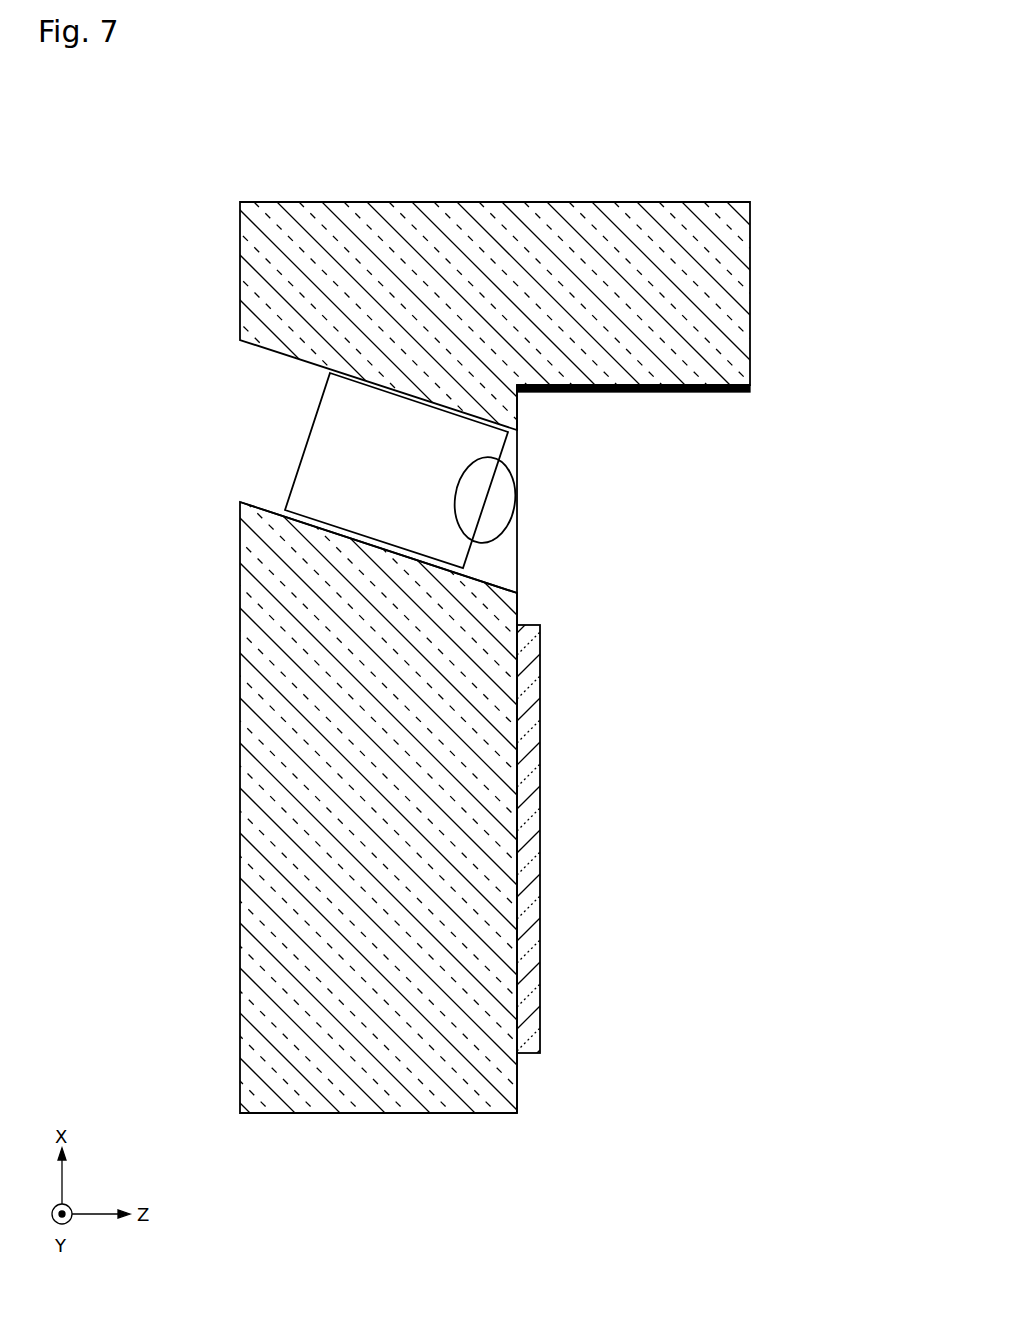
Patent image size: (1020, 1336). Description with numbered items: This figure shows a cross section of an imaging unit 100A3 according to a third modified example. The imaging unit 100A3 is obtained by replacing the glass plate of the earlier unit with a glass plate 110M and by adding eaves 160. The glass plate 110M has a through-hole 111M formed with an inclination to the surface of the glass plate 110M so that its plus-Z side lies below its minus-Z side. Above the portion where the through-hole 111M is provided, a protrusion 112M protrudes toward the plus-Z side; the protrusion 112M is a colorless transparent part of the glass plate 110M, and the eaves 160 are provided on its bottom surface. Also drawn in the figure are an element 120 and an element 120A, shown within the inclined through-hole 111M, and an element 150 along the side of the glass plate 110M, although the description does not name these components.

The imaging unit 100A3 is at (770, 141).
The protrusion 112M is at (741, 291).
The eaves 160 is at (720, 392).
The insert 120A is at (485, 490).
The molded article 120 is at (318, 480).
The through-hole 111M is at (477, 583).
The plate member 150 is at (534, 855).
The glass plate 110M is at (363, 1098).